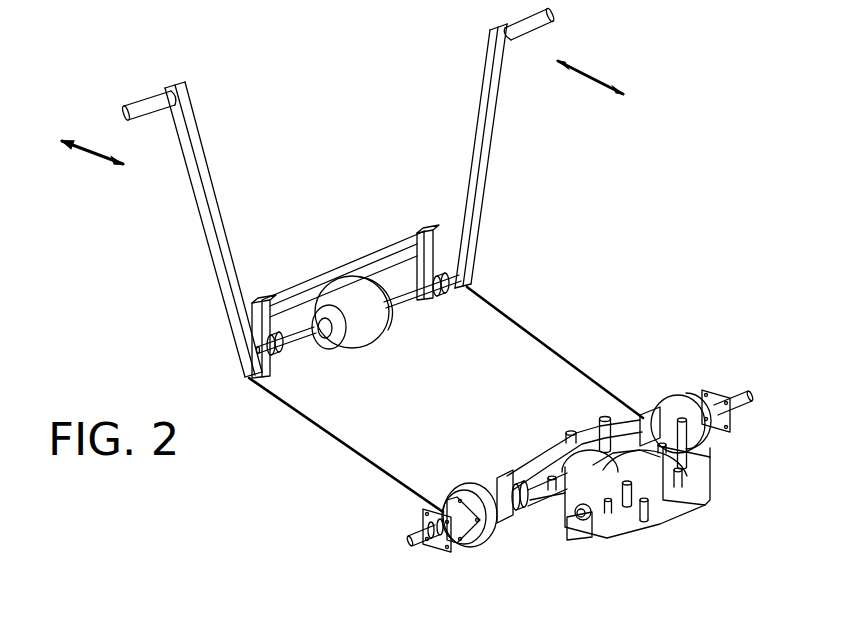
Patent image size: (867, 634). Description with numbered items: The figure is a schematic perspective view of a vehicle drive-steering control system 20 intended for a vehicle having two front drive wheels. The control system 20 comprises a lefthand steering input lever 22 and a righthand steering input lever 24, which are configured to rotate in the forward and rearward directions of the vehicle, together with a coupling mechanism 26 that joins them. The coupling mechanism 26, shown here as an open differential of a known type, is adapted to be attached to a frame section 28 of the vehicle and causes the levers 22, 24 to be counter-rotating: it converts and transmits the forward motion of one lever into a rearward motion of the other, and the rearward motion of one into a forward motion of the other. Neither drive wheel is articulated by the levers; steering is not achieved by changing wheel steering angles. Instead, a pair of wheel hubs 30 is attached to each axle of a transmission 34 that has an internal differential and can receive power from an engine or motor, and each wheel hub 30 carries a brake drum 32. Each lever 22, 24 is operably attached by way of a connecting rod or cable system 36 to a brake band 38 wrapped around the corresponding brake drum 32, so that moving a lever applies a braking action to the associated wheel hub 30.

The control system 20 is at (572, 210).
The lefthand steering input lever 22 is at (472, 112).
The righthand steering input lever 24 is at (196, 145).
The coupling mechanism 26 is at (373, 320).
The frame section 28 is at (373, 242).
The wheel hub 30 is at (745, 390).
The brake drum 32 is at (692, 435).
The transmission 34 is at (685, 503).
The connecting rod or cable system 36 is at (508, 312).
The brake band 38 is at (683, 397).